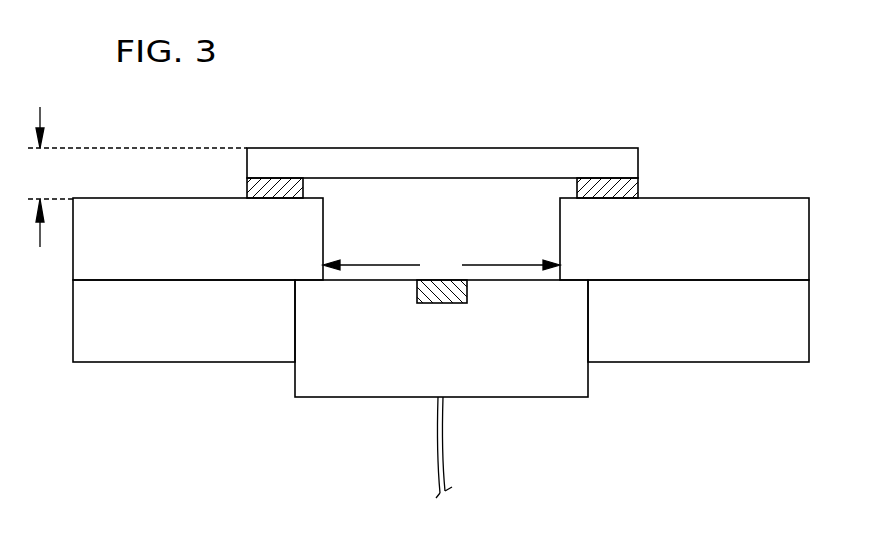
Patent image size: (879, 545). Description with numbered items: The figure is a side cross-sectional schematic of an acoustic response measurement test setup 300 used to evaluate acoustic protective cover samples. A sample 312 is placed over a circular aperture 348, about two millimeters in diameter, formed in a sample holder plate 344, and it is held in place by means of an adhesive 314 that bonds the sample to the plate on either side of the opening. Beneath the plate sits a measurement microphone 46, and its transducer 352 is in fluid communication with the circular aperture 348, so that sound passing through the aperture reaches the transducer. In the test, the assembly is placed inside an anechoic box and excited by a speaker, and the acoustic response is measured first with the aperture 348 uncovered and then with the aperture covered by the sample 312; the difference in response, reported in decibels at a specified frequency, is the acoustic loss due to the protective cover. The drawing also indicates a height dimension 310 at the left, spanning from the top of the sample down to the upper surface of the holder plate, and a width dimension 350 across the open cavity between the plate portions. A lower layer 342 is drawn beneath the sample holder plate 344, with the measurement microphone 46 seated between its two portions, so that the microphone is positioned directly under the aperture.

The acoustic response measurement test setup 300 is at (513, 110).
The height dimension 310 is at (136, 164).
The sample 312 is at (372, 157).
The adhesive 314 is at (245, 194).
The substrate / lower layer 342 is at (695, 347).
The sample holder plate 344 is at (695, 212).
The circular aperture 348 is at (466, 223).
The cavity width 350 is at (441, 266).
The transducer 352 is at (422, 306).
The measurement microphone 46 is at (520, 397).